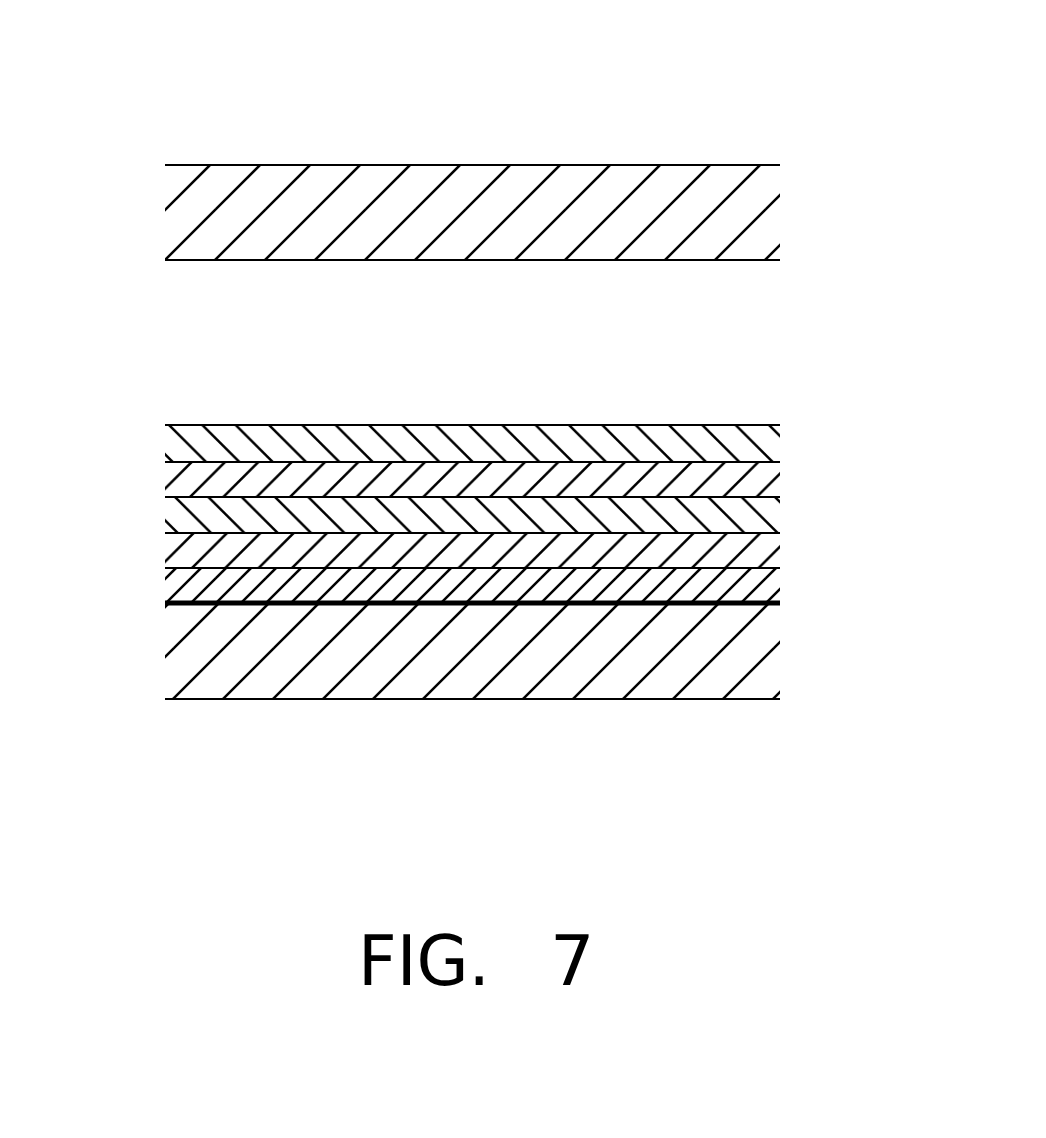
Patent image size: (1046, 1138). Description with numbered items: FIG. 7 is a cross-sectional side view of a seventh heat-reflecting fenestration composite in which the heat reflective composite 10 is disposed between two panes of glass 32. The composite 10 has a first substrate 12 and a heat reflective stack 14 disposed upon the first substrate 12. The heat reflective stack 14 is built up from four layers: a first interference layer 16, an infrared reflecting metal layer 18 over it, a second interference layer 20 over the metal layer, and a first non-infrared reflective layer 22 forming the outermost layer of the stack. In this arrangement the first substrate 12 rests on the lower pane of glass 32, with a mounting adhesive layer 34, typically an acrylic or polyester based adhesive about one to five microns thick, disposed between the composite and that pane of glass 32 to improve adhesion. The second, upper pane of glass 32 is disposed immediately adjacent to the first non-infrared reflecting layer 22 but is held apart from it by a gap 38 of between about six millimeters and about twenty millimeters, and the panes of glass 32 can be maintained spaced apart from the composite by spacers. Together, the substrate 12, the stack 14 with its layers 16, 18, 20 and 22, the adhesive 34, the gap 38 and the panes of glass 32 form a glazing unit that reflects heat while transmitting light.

The heat reflective composite 10 is at (485, 130).
The first substrate 12 is at (743, 585).
The heat reflective stack 14 is at (482, 483).
The first interference layer 16 is at (747, 546).
The infrared reflecting metal layer 18 is at (757, 513).
The second interference layer 20 is at (760, 478).
The first non-infrared reflective layer 22 is at (743, 448).
The pane of glass 32 is at (747, 213).
The mounting adhesive layer 34 is at (432, 606).
The gap 38 is at (740, 333).